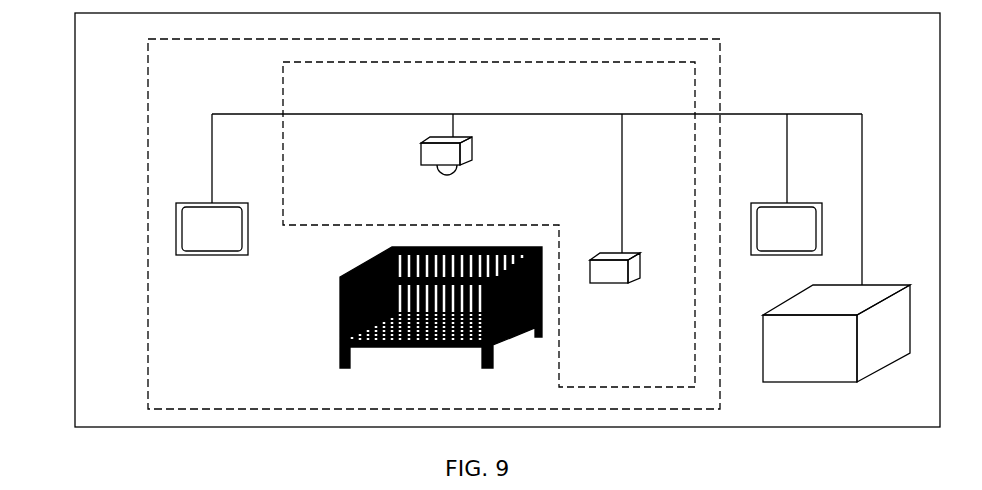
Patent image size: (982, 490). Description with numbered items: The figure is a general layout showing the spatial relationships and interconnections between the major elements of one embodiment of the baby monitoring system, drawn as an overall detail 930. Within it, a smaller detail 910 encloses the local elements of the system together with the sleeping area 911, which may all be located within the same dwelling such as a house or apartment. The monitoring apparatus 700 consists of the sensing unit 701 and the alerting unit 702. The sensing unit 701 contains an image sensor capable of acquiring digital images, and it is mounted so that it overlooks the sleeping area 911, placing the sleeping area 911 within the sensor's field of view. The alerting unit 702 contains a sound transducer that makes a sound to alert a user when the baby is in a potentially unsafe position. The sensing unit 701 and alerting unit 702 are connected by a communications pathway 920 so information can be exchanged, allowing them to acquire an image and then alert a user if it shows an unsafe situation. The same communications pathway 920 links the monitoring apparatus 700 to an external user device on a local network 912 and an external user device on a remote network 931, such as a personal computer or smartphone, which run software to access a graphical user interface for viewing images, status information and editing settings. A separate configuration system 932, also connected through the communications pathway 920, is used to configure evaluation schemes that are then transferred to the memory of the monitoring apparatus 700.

The monitoring system detail 930 is at (482, 220).
The local elements detail 910 is at (410, 224).
The monitoring apparatus 700 is at (466, 224).
The communications pathway 920 is at (537, 186).
The sensing unit 701 is at (416, 166).
The alerting unit 702 is at (615, 285).
The sleeping area 911 is at (441, 314).
The external user device on a local network 912 is at (212, 245).
The external user device on a remote network 931 is at (786, 245).
The separate configuration system 932 is at (836, 351).